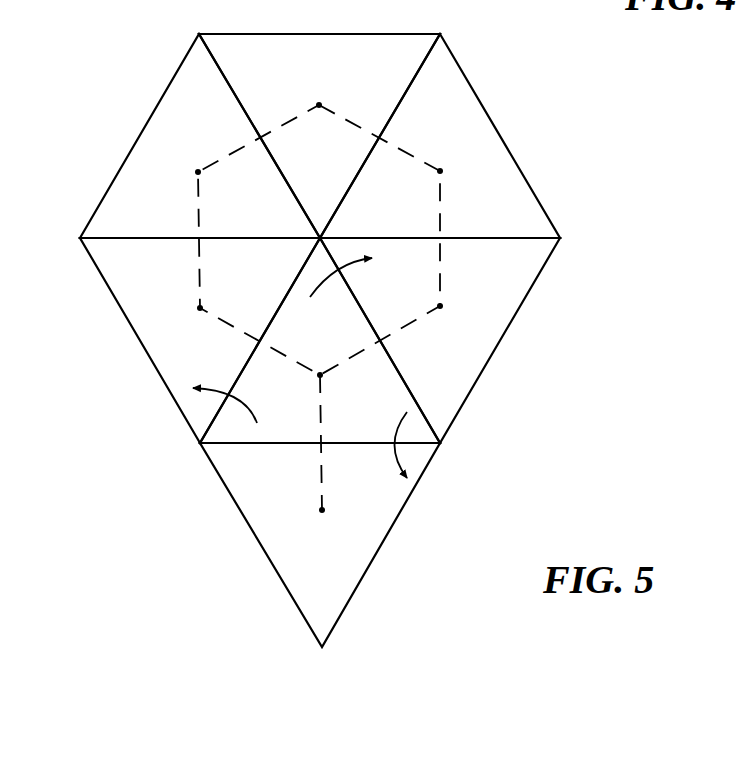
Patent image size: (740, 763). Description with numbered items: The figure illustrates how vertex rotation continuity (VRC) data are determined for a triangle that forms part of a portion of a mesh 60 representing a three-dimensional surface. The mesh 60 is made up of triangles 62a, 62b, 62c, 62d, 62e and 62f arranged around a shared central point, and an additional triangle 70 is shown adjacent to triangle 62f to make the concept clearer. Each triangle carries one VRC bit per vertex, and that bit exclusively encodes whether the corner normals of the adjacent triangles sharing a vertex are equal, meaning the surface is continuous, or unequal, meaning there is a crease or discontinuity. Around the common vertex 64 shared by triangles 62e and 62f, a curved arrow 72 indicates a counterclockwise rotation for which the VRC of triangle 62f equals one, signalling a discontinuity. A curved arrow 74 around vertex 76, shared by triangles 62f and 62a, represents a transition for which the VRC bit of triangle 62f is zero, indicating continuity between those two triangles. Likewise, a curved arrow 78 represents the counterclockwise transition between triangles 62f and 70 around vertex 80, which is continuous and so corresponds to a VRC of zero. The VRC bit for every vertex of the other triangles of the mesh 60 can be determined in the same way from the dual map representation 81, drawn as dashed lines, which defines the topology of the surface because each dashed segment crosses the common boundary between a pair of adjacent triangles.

The mesh 60 is at (298, 323).
The triangle 62a is at (157, 372).
The triangle 62b is at (137, 143).
The triangle 62c is at (325, 32).
The triangle 62d is at (500, 133).
The triangle 62e is at (508, 328).
The triangle 62f is at (428, 446).
The common vertex 64 is at (313, 235).
The additional triangle 70 is at (248, 523).
The curved arrow 72 is at (355, 276).
The curved arrow 74 is at (252, 410).
The vertex 76 is at (202, 447).
The curved arrow 78 is at (398, 433).
The vertex 80 is at (447, 447).
The dual map representation 81 is at (441, 210).